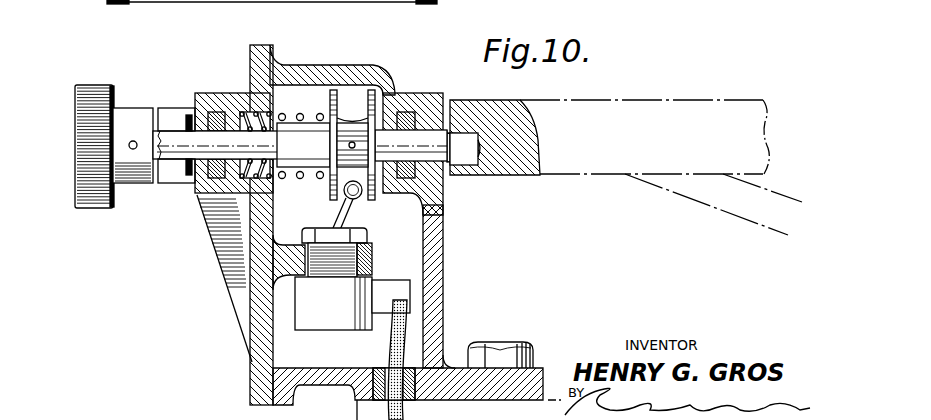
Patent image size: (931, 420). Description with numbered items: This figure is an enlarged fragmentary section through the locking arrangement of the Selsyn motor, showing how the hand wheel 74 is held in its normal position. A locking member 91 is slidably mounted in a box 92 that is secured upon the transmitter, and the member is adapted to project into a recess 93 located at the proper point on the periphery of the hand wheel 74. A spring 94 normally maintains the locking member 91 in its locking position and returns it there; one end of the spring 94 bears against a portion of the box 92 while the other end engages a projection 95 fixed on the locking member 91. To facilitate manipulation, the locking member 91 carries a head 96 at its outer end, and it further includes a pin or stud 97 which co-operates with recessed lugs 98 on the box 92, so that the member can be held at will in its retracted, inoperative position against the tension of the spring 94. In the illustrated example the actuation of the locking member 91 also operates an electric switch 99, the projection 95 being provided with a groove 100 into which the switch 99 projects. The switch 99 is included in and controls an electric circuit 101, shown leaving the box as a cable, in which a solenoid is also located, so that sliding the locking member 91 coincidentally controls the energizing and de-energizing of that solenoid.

The hand wheel 74 is at (583, 174).
The locking member 91 is at (430, 155).
The box 92 is at (262, 290).
The recess 93 is at (488, 150).
The spring 94 is at (283, 112).
The projection 95 is at (336, 108).
The head 96 is at (93, 210).
The pin or stud 97 is at (190, 180).
The recessed lugs 98 is at (167, 113).
The electric switch 99 is at (361, 216).
The groove 100 is at (340, 118).
The electric circuit 101 is at (400, 337).